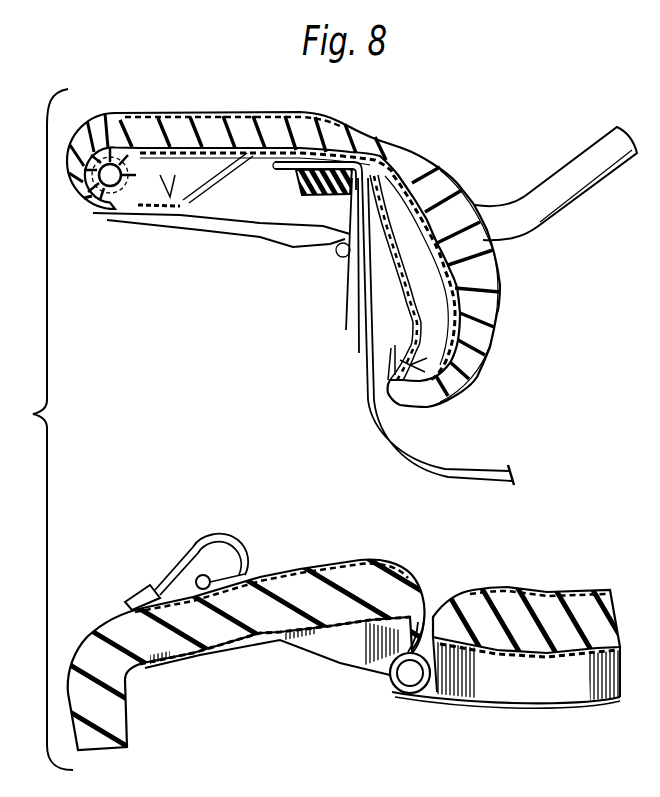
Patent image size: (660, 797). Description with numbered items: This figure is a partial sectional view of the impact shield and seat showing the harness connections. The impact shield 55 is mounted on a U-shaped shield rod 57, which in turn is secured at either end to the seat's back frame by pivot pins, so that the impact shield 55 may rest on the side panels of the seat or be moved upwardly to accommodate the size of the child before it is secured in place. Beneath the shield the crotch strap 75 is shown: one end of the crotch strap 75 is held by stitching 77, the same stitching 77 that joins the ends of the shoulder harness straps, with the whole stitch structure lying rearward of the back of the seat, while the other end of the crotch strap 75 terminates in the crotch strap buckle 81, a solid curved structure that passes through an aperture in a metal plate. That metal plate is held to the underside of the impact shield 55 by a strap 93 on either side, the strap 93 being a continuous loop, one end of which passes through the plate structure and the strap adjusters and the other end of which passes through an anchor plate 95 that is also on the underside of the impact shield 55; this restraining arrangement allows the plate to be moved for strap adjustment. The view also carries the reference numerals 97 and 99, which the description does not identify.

The impact shield 55 is at (223, 93).
The liner cover layer 99 is at (292, 124).
The strap 93 is at (358, 134).
The stirrup hook 97 is at (373, 148).
The anchor plate 95 is at (253, 175).
The U-shaped shield rod 57 is at (100, 215).
The stitching 77 is at (447, 468).
The crotch strap buckle 81 is at (245, 546).
The crotch strap 75 is at (410, 547).